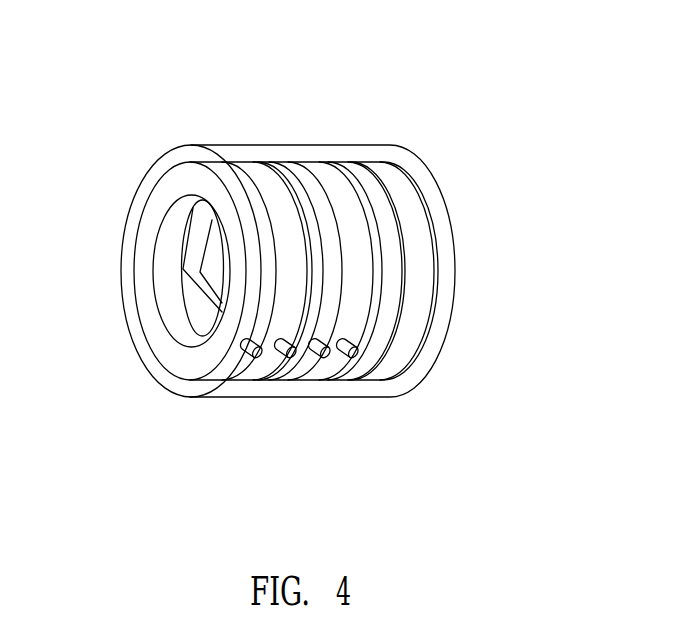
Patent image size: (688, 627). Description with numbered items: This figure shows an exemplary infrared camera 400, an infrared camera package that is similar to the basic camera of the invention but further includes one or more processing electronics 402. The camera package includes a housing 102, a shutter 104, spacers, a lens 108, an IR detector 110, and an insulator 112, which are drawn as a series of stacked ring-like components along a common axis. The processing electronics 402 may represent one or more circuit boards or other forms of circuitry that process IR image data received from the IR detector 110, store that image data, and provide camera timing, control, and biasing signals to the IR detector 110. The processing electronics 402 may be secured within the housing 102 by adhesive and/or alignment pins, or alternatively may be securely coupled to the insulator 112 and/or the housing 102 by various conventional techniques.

The IR camera 400 is at (468, 451).
The housing 102 is at (329, 145).
The shutter 104 is at (197, 365).
The IR detector 110 is at (190, 258).
The lens 108 is at (292, 373).
The insulator 112 is at (357, 373).
The processing electronics 402 is at (392, 373).